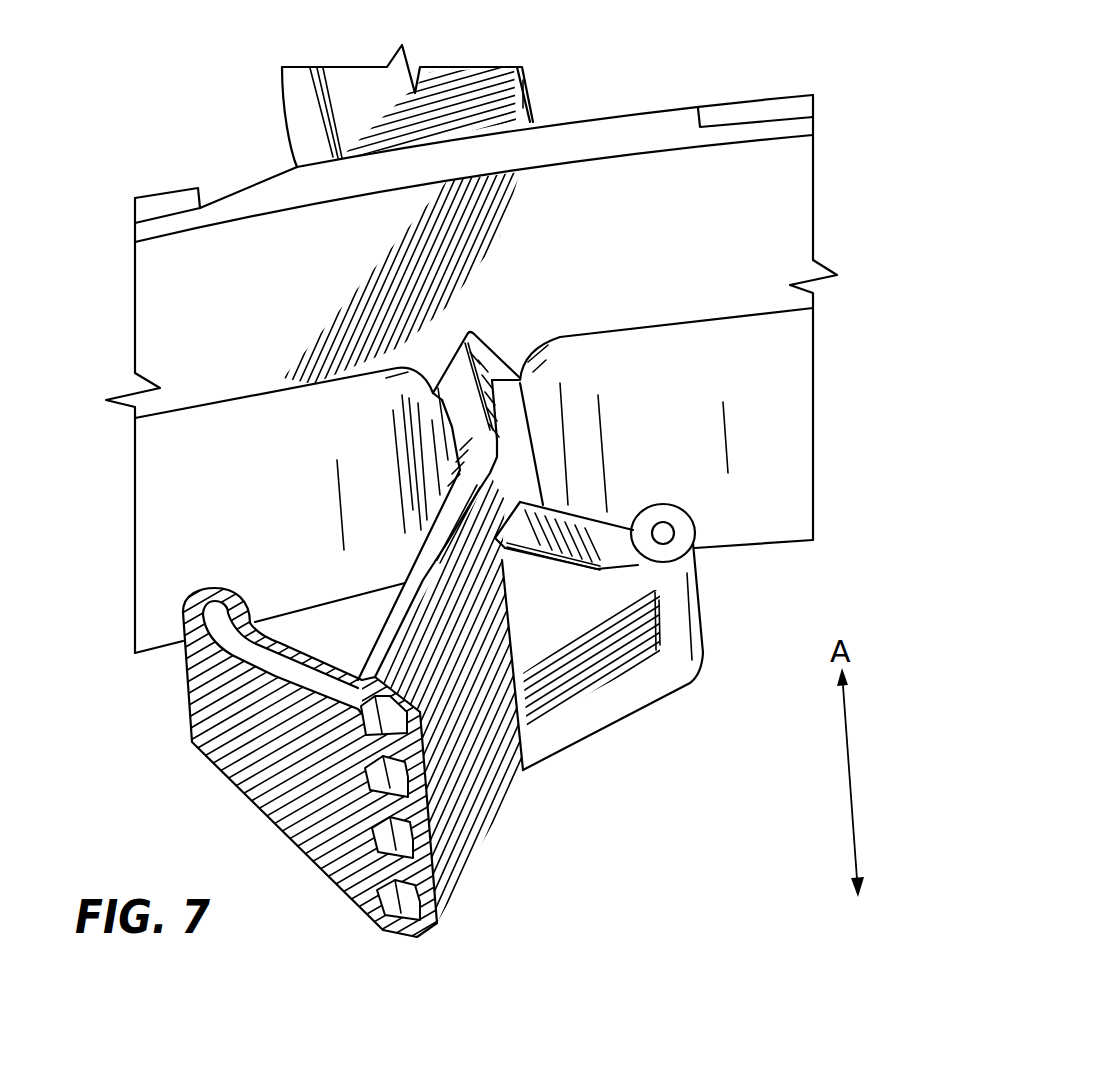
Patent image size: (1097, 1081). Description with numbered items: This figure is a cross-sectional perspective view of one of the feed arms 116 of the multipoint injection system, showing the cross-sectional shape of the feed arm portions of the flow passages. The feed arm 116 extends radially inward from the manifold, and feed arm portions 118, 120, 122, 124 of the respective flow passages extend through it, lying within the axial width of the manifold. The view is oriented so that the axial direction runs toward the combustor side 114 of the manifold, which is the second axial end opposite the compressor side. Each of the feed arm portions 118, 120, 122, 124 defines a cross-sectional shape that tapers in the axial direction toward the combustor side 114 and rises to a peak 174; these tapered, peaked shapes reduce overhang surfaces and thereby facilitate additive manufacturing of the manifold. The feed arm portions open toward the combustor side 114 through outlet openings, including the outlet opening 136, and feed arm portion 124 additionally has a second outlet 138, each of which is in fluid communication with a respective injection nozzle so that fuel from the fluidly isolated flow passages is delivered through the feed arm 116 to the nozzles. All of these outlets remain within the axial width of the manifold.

The combustor side 114 is at (632, 180).
The feed arm 116 is at (882, 220).
The feed arm portion 118 is at (430, 923).
The feed arm portion 120 is at (402, 848).
The feed arm portion 122 is at (385, 758).
The feed arm portion 124 is at (418, 716).
The outlet opening 136 is at (198, 602).
The second outlet 138 is at (697, 540).
The peak 174 is at (393, 787).